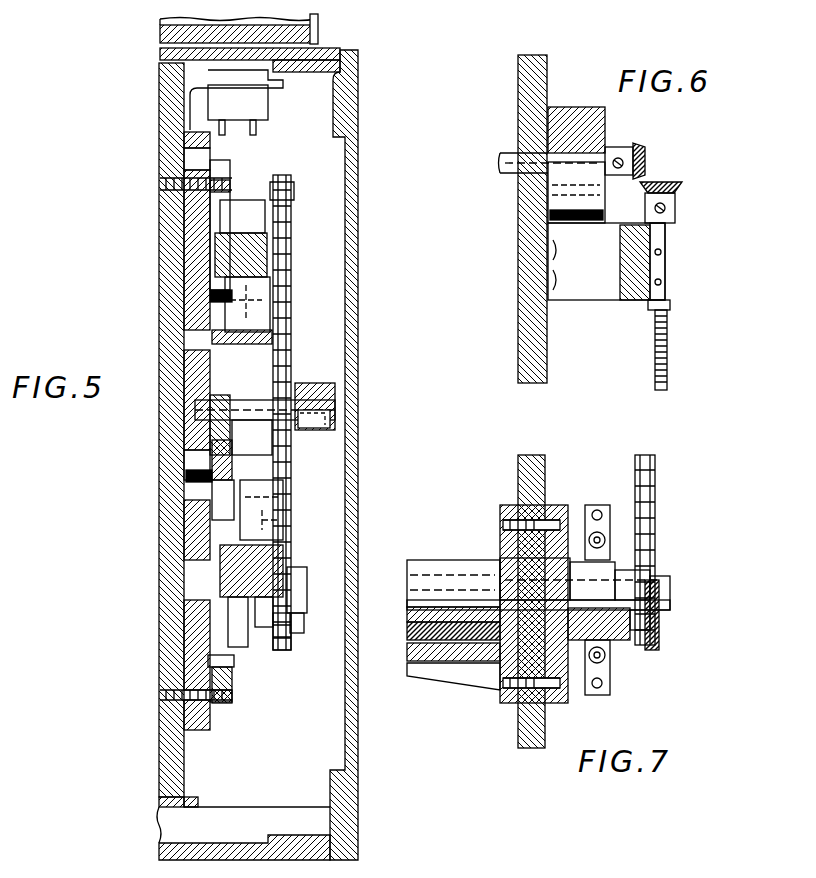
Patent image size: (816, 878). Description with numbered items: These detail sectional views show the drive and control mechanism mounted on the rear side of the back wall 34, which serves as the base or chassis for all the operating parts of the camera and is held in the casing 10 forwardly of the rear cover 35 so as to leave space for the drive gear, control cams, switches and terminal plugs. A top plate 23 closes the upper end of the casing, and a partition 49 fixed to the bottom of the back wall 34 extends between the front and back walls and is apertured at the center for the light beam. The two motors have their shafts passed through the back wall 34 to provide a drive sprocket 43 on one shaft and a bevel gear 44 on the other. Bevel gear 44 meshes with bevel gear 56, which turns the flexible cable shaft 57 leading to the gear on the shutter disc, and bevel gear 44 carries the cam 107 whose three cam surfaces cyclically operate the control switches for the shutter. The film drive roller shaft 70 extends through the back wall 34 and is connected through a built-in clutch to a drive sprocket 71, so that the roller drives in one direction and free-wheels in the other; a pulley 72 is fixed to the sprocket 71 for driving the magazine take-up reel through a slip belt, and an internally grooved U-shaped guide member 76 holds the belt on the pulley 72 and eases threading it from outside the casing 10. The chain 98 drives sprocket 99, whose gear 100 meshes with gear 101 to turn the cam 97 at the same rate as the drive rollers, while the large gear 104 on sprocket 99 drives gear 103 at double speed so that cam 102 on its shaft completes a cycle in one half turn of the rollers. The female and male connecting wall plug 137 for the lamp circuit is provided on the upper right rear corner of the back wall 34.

In FIG. 5, the casing 10 is at (170, 853).
In FIG. 5, the top plate 23 is at (318, 22).
In FIG. 5, the back wall 34 is at (166, 627).
In FIG. 6, the back wall 34 is at (520, 248).
In FIG. 7, the back wall 34 is at (518, 476).
In FIG. 5, the rear cover 35 is at (358, 322).
In FIG. 5, the drive sprocket 43 is at (272, 196).
In FIG. 6, the bevel gear 44 is at (640, 148).
In FIG. 5, the partition 49 is at (192, 803).
In FIG. 6, the bevel gear 56 is at (676, 185).
In FIG. 6, the flexible cable shaft 57 is at (668, 352).
In FIG. 7, the shaft 70 is at (497, 585).
In FIG. 5, the drive sprocket 71 is at (300, 630).
In FIG. 7, the drive sprocket 71 is at (658, 560).
In FIG. 5, the pulley 72 is at (250, 648).
In FIG. 7, the pulley 72 is at (604, 552).
In FIG. 7, the U-shaped guide member 76 is at (612, 668).
In FIG. 5, the cam 97 is at (276, 494).
In FIG. 5, the chain 98 is at (291, 262).
In FIG. 7, the chain 98 is at (655, 495).
In FIG. 5, the sprocket 99 is at (292, 372).
In FIG. 5, the gear 100 is at (200, 478).
In FIG. 5, the gear 101 is at (212, 498).
In FIG. 5, the cam 102 is at (268, 243).
In FIG. 5, the gear 103 is at (192, 300).
In FIG. 5, the large gear 104 is at (212, 455).
In FIG. 6, the cam 107 is at (590, 112).
In FIG. 5, the wall plug 137 is at (260, 104).